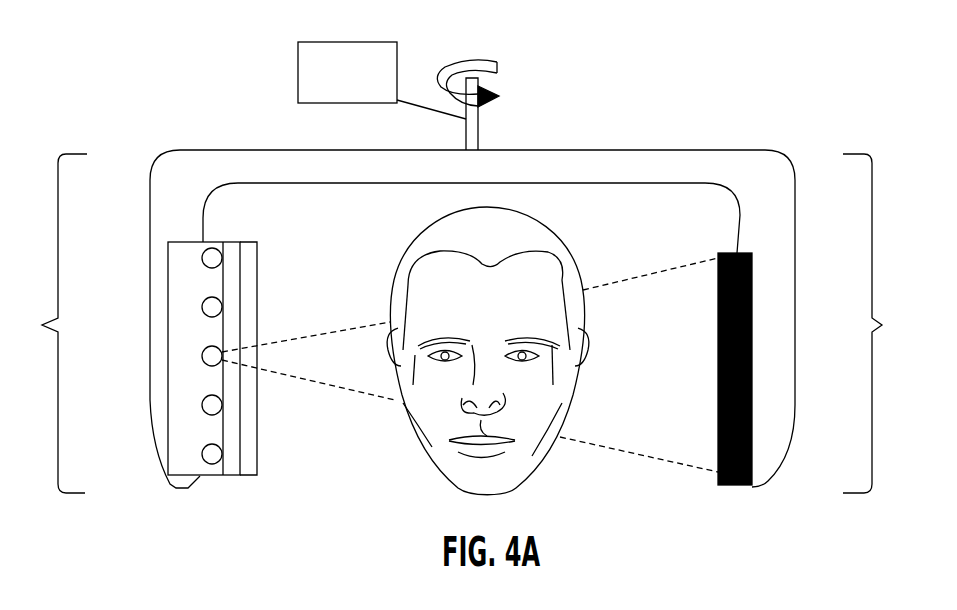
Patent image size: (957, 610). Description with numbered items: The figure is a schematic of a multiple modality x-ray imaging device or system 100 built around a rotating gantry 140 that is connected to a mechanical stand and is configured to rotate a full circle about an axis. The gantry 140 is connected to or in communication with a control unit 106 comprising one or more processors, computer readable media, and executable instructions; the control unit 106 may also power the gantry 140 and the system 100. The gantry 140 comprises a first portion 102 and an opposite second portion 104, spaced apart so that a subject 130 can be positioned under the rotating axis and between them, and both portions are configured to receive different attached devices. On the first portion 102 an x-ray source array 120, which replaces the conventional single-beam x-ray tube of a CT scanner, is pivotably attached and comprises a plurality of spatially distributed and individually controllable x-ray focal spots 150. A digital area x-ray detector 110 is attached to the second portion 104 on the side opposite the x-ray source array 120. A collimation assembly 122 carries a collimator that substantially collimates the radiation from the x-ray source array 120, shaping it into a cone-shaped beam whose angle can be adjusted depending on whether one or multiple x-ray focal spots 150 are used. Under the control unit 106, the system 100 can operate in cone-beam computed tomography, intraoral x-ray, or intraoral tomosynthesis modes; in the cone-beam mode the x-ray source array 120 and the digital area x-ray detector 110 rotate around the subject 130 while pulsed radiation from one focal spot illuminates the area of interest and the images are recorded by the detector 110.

The x-ray imaging device or system 100 is at (706, 104).
The first portion 102 is at (45, 323).
The second portion 104 is at (881, 323).
The control unit 106 is at (298, 72).
The digital area x-ray detector 110 is at (752, 385).
The x-ray source array 120 is at (168, 293).
The collimation assembly 122 is at (243, 475).
The subject 130 is at (392, 292).
The rotating gantry 140 is at (404, 150).
The x-ray focal spots 150 is at (197, 318).